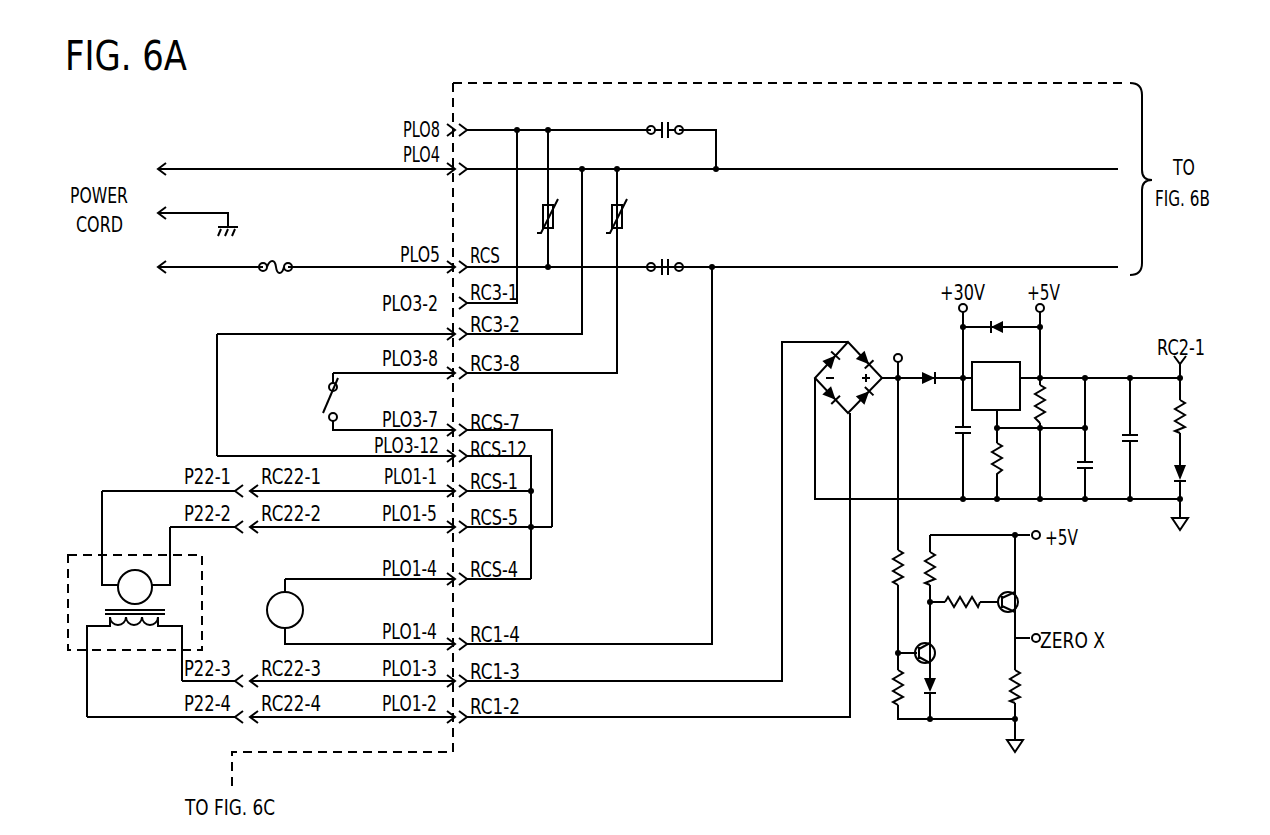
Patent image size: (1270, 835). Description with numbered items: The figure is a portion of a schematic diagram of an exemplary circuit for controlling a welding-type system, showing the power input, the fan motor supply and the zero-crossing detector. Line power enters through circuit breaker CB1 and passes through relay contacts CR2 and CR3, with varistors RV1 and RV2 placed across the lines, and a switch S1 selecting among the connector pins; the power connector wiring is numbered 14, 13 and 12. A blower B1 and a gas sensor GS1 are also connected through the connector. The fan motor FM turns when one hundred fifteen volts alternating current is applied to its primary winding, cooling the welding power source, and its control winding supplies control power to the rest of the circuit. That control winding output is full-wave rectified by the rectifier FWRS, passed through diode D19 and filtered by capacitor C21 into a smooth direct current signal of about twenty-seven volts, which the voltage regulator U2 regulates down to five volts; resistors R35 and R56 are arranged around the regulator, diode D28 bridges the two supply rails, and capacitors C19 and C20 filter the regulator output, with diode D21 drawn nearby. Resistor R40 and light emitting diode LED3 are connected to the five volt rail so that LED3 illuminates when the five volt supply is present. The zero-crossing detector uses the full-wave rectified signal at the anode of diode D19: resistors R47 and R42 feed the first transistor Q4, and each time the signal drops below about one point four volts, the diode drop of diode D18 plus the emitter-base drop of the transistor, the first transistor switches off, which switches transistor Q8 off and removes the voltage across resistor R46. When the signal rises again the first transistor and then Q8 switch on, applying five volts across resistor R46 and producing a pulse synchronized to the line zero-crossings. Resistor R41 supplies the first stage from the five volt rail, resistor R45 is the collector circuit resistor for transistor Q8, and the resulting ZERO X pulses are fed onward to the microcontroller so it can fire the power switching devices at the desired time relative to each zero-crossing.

The circuit breaker CB1 is at (275, 255).
The relay contact CR2 is at (665, 119).
The relay contact CR3 is at (665, 256).
The varistor RV1 is at (633, 271).
The varistor RV2 is at (558, 198).
The switch S1 is at (320, 399).
The blower motor B1 is at (135, 587).
The fan motor FM is at (135, 636).
The gas sensor GS1 is at (285, 610).
The full wave rectifier FWRS is at (867, 370).
The diode D19 is at (930, 392).
The diode D28 is at (997, 314).
The voltage regulator U2 is at (996, 375).
The capacitor C21 is at (946, 432).
The resistor R35 is at (1013, 460).
The resistor R56 is at (1055, 400).
The diode D21 is at (1106, 420).
The capacitor C20 is at (1101, 468).
The capacitor C19 is at (1147, 440).
The resistor R40 is at (1198, 413).
The LED LED3 is at (1204, 477).
The resistor R47 is at (880, 567).
The resistor R42 is at (880, 687).
The resistor R41 is at (947, 568).
The resistor R45 is at (962, 617).
The transistor Q8 is at (1022, 602).
The transistor Q4 is at (938, 652).
The diode D18 is at (949, 688).
The resistor R46 is at (1034, 686).
The wire 14 is at (370, 600).
The wire 13 is at (352, 668).
The wire 12 is at (352, 704).